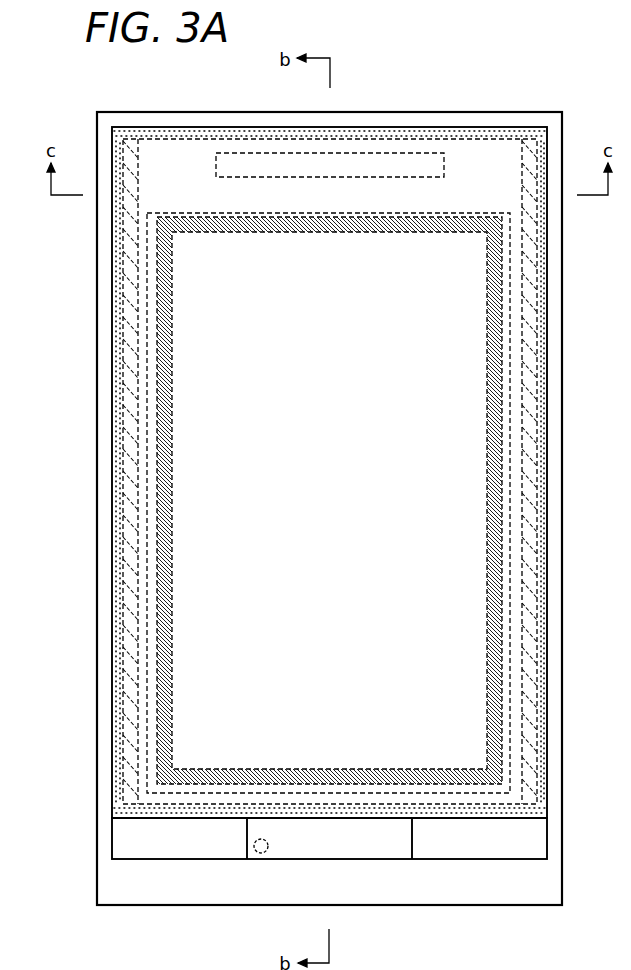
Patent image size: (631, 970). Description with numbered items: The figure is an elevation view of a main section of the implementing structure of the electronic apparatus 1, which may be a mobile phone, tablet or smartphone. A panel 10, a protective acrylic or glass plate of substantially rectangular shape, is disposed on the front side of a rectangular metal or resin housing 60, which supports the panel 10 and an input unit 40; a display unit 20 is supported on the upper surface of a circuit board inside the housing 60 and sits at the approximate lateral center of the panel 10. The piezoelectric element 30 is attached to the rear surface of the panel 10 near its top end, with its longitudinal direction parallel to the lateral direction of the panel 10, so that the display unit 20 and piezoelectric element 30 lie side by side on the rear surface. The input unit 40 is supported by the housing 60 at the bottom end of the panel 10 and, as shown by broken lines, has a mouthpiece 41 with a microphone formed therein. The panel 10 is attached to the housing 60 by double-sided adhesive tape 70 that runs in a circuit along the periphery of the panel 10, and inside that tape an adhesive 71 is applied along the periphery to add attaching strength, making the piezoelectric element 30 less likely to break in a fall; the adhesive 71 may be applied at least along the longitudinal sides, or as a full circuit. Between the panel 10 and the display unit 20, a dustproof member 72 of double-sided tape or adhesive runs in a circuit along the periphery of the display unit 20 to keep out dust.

The electronic apparatus 1 is at (178, 102).
The panel 10 is at (453, 127).
The display unit 20 is at (450, 213).
The piezoelectric element 30 is at (216, 165).
The input unit 40 is at (132, 851).
The mouthpiece 41 is at (262, 853).
The housing 60 is at (368, 127).
The double-sided adhesive tape 70 is at (541, 426).
The adhesive 71 is at (132, 530).
The dustproof member 72 is at (166, 416).